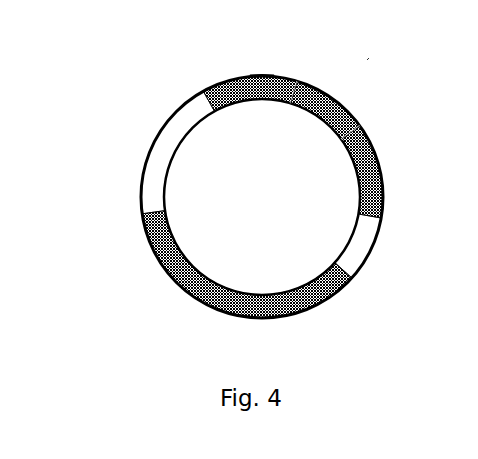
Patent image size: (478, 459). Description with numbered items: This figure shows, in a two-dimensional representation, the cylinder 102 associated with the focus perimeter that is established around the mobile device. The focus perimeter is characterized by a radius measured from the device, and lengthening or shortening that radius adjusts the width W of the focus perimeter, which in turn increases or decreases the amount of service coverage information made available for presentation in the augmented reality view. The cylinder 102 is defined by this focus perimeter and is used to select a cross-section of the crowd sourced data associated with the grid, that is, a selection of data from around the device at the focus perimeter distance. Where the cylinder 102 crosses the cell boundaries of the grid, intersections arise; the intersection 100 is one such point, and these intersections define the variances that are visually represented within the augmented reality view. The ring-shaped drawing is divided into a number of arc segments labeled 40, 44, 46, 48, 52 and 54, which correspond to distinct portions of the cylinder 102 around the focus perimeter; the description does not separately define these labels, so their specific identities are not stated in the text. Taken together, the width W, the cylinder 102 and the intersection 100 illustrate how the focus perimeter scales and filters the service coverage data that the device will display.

The ring / annular body 40 is at (143, 203).
The ring segment 44 is at (297, 78).
The ring segment 46 is at (356, 109).
The ring segment 48 is at (385, 198).
The light ring segment 52 is at (202, 90).
The ring top / center line 54 is at (263, 33).
The intersection 100 is at (360, 272).
The cylinder 102 is at (368, 60).
The width W is at (238, 165).